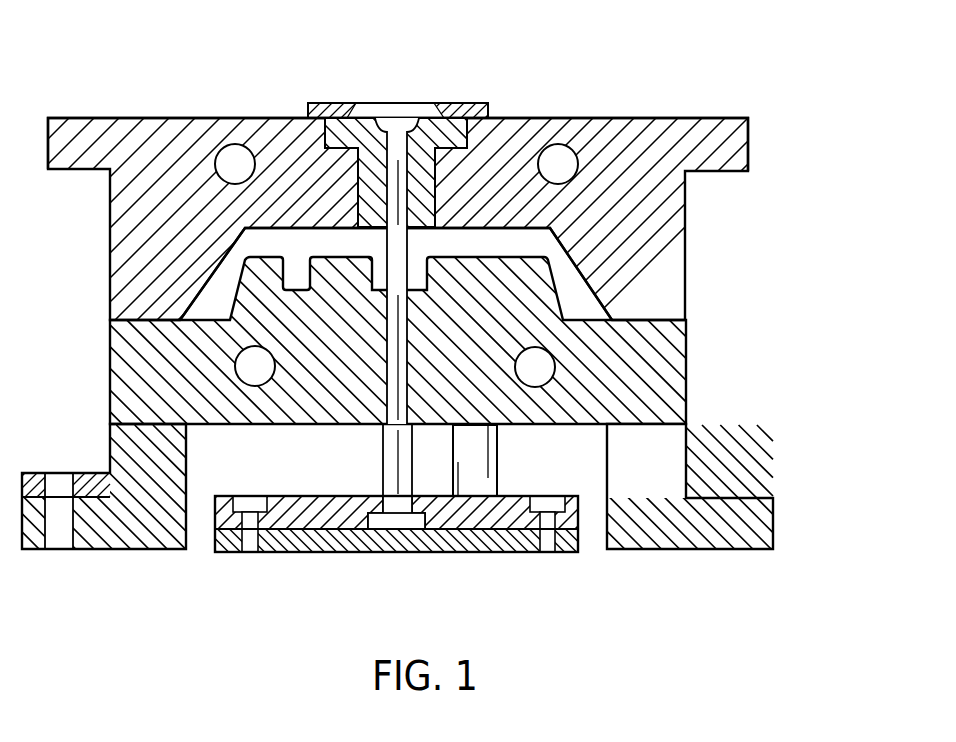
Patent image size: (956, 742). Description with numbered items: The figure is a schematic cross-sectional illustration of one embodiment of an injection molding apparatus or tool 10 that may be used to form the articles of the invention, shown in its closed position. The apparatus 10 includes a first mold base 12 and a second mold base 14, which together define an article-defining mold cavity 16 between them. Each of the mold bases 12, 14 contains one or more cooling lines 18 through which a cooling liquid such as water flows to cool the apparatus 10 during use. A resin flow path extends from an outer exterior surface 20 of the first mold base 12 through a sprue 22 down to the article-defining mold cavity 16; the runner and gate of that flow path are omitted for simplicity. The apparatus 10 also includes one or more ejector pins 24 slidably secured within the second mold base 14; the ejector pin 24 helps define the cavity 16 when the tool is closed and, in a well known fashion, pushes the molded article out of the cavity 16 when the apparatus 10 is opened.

The injection molding apparatus 10 is at (452, 320).
The first mold base 12 is at (688, 283).
The second mold base 14 is at (690, 373).
The article-defining mold cavity 16 is at (497, 233).
The cooling lines 18 is at (235, 150).
The outer exterior surface 20 is at (160, 118).
The sprue 22 is at (427, 118).
The ejector pin 24 is at (380, 460).